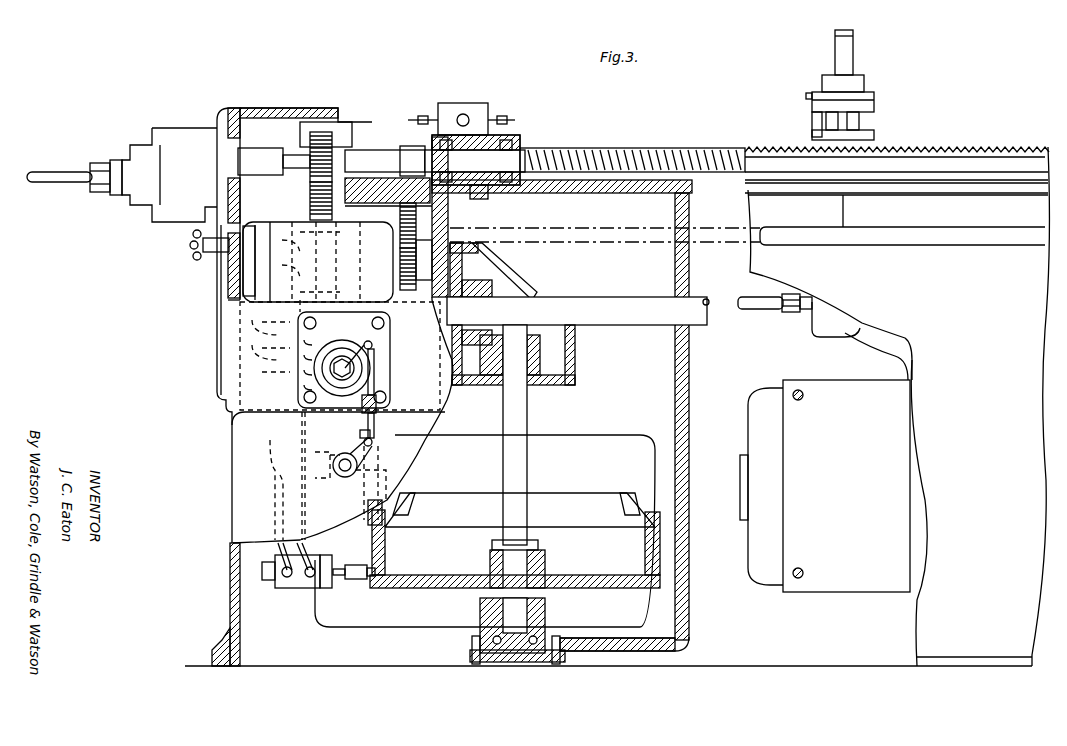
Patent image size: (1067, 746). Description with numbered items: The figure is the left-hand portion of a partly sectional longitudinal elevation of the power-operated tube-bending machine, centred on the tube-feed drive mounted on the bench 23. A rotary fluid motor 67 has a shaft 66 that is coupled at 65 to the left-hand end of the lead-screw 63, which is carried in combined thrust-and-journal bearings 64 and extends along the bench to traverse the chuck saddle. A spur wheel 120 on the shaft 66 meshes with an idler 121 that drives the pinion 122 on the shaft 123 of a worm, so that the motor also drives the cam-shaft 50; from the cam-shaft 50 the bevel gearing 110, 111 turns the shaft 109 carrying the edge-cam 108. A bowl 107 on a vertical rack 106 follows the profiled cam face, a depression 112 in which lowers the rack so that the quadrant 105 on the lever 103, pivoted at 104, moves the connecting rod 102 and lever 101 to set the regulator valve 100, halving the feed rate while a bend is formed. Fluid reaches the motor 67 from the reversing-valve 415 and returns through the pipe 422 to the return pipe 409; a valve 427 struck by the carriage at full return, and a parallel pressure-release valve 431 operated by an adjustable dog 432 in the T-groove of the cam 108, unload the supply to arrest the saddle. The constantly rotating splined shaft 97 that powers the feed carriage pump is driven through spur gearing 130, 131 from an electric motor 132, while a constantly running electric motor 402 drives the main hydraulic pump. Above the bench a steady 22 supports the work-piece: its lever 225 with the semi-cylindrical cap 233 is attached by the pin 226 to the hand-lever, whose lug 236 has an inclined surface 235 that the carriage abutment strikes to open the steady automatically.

The steady 22 is at (846, 85).
The bench 23 is at (665, 192).
The cam-shaft 50 is at (630, 298).
The lead-screw 63 is at (660, 147).
The combined thrust-and-journal bearings 64 is at (512, 132).
The coupling 65 is at (392, 173).
The shaft 66 is at (290, 175).
The rotary fluid motor 67 is at (146, 212).
The splined shaft 97 is at (554, 235).
The regulator valve 100 is at (298, 402).
The lever 101 is at (372, 345).
The connecting rod 102 is at (376, 382).
The lever 103 is at (372, 442).
The pivot 104 is at (340, 476).
The quadrant 105 is at (360, 435).
The vertical rack 106 is at (352, 487).
The bowl 107 is at (376, 480).
The edge-cam 108 is at (488, 488).
The shaft 109 is at (507, 458).
The bevel gearing 110 is at (490, 280).
The bevel gearing 111 is at (548, 352).
The depression 112 is at (412, 507).
The spur wheel 120 is at (308, 140).
The idler 121 is at (308, 210).
The pinion 122 is at (300, 276).
The shaft 123 is at (298, 250).
The spur gearing 130 is at (400, 222).
The spur gearing 131 is at (400, 282).
The electric motor 132 is at (245, 270).
The lever 225 is at (860, 120).
The pin 226 is at (853, 57).
The semi-cylindrical cap 233 is at (875, 100).
The inclined surface 235 is at (812, 112).
The lug 236 is at (808, 95).
The electric motor 402 is at (749, 425).
The return pipe 409 is at (858, 342).
The reversing-valve 415 is at (832, 330).
The pipe 422 is at (768, 309).
The valve 427 is at (488, 106).
The pressure-release valve 431 is at (292, 590).
The dog 432 is at (358, 582).